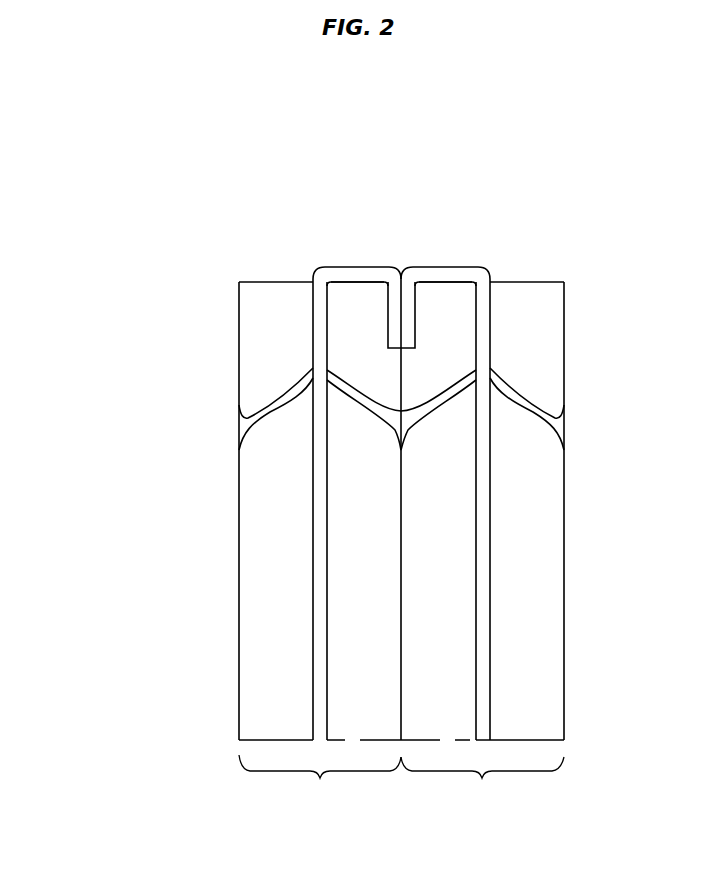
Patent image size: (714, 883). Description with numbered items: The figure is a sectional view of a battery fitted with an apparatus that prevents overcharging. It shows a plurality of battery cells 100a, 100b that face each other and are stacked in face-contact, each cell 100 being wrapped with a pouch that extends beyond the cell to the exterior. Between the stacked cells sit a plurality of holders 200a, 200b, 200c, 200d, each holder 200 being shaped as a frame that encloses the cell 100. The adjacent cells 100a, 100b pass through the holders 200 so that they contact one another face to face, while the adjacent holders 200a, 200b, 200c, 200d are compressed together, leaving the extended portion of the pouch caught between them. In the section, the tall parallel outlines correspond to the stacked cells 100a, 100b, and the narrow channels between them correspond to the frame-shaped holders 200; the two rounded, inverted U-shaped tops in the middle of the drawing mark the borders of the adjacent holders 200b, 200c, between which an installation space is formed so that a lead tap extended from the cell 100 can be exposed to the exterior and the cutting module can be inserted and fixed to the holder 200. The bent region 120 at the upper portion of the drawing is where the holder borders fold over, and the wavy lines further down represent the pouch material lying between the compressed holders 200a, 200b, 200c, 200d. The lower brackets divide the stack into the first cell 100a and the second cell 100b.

The battery cell 100 is at (230, 558).
The battery cell 100a is at (320, 780).
The battery cell 100b is at (482, 781).
The folded portion 120 is at (328, 272).
The holder 200 is at (230, 353).
The holder 200a is at (272, 288).
The holder 200b is at (372, 290).
The holder 200c is at (433, 290).
The holder 200d is at (533, 290).